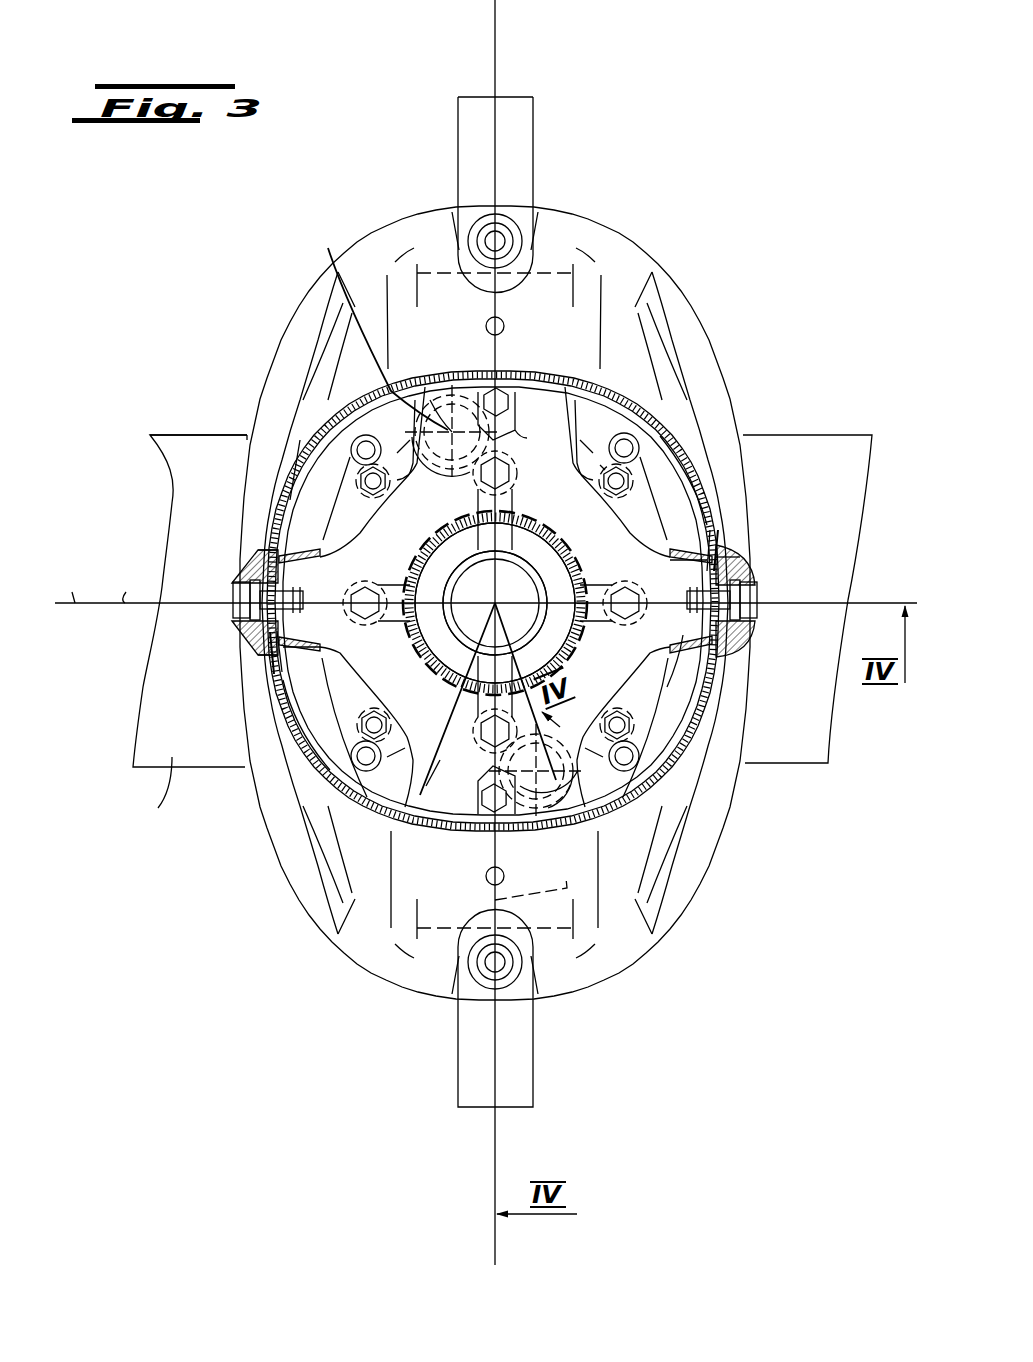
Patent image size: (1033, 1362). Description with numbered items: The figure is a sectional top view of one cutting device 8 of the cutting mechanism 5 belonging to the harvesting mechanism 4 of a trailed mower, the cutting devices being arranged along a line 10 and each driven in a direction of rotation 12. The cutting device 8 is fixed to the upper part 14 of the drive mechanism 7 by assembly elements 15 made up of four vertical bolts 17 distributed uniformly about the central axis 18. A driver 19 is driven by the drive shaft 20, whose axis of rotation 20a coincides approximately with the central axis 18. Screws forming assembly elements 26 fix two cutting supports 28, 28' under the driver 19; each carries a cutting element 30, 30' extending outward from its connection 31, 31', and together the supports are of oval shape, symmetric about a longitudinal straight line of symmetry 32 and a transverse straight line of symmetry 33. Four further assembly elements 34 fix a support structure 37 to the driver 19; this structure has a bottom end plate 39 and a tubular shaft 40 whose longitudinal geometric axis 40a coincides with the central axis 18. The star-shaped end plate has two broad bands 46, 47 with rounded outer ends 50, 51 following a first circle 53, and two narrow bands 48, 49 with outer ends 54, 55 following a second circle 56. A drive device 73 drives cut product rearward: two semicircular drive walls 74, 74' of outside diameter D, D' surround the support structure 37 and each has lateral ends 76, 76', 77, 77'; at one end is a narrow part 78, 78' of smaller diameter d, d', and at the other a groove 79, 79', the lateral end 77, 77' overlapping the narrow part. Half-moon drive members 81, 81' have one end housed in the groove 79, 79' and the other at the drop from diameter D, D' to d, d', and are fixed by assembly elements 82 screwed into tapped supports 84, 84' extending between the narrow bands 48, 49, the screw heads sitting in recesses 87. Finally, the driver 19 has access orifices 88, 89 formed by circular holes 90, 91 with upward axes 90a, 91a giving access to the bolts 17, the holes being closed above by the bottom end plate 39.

The harvesting mechanism 4 is at (168, 433).
The cutting mechanism 5 is at (157, 452).
The drive mechanism 7 is at (156, 797).
The cutting device 8 is at (675, 296).
The line 10 is at (71, 585).
The direction of rotation 12 is at (420, 87).
The upper part of the drive mechanism 14 is at (212, 502).
The assembly elements 15 is at (357, 480).
The bolts 17 is at (640, 489).
The central axis 18 is at (395, 838).
The driver 19 is at (345, 691).
The drive shaft 20 is at (512, 576).
The axis of rotation 20a is at (495, 603).
The assembly element 26 is at (363, 433).
The cutting support 28 is at (495, 801).
The cutting support 28' is at (495, 390).
The cutting element 30 is at (476, 1048).
The cutting element 30' is at (538, 176).
The connection 31 is at (469, 983).
The connection 31' is at (554, 216).
The longitudinal straight line of symmetry 32 is at (497, 68).
The transverse straight line of symmetry 33 is at (124, 585).
The assembly element 34 is at (478, 482).
The support structure 37 is at (702, 528).
The bottom end plate 39 is at (410, 553).
The tubular shaft 40 is at (526, 523).
The longitudinal geometric axis 40a is at (495, 603).
The broad band 46 is at (557, 440).
The broad band 47 is at (426, 786).
The narrow band 48 is at (686, 589).
The narrow band 49 is at (337, 587).
The outer end 50 is at (563, 377).
The outer end 51 is at (563, 826).
The first circle 53 is at (414, 392).
The outer end 54 is at (752, 562).
The outer end 55 is at (257, 640).
The second circle 56 is at (290, 547).
The drive device 73 is at (345, 431).
The drive wall 74 is at (470, 756).
The drive wall 74' is at (518, 460).
The lateral end 76 is at (219, 676).
The lateral end 76' is at (787, 548).
The lateral end 77 is at (762, 676).
The lateral end 77' is at (244, 563).
The narrow part 78 is at (308, 629).
The narrow part 78' is at (758, 576).
The groove 79 is at (756, 641).
The groove 79' is at (231, 552).
The drive member 81 is at (782, 567).
The drive member 81' is at (227, 649).
The assembly elements 82 is at (235, 613).
The tapped support 84 is at (686, 669).
The tapped support 84' is at (309, 527).
The recess 87 is at (250, 580).
The access orifice 88 is at (555, 779).
The access orifice 89 is at (440, 452).
The circular hole 90 is at (538, 764).
The longitudinal axis 90a is at (573, 790).
The circular hole 91 is at (450, 423).
The longitudinal axis 91a is at (379, 325).
The outside diameter D is at (260, 774).
The outside diameter D' is at (768, 448).
The diameter d is at (215, 686).
The diameter d' is at (770, 537).